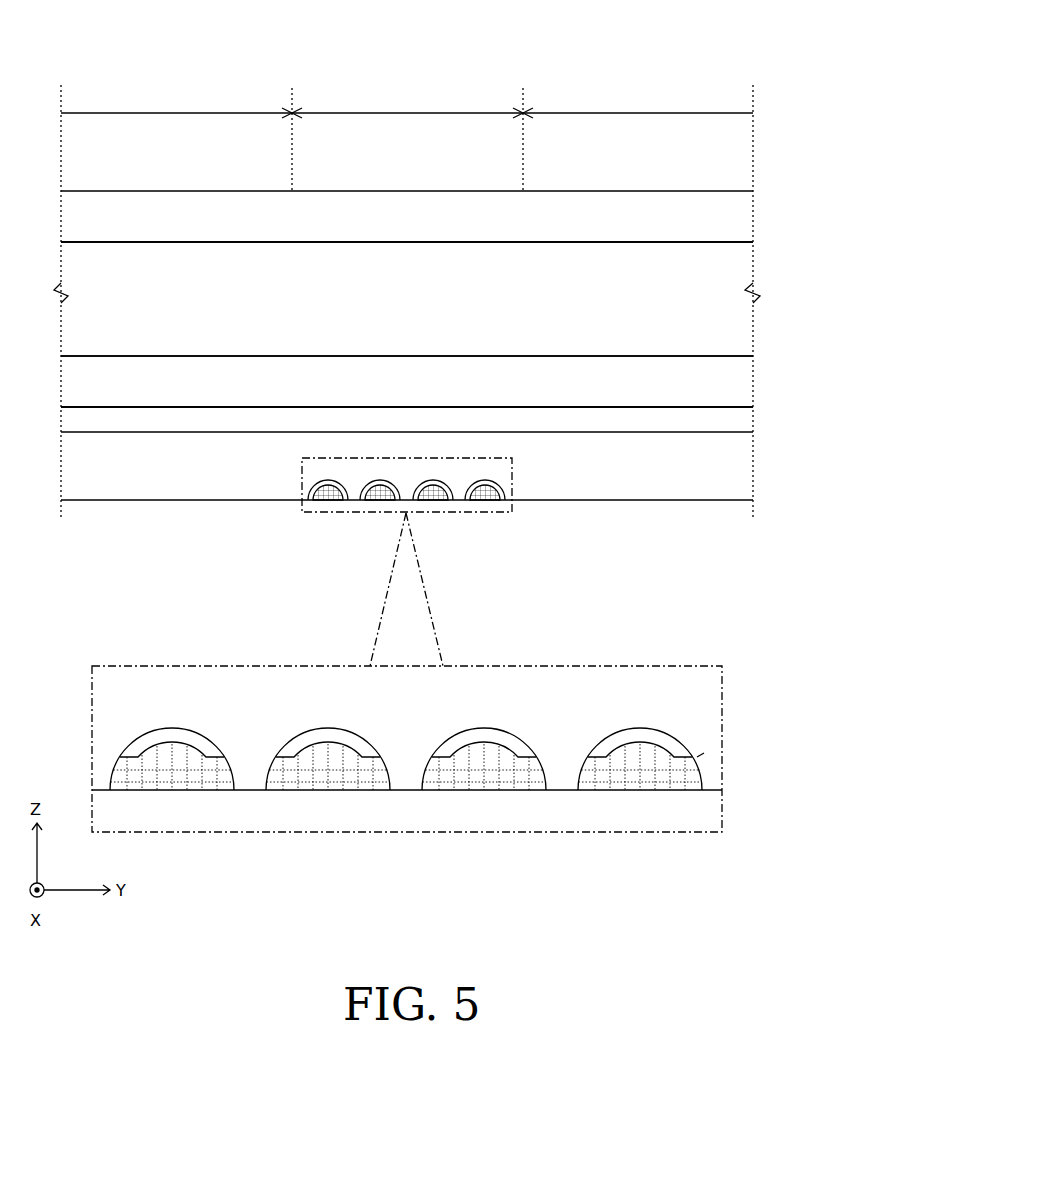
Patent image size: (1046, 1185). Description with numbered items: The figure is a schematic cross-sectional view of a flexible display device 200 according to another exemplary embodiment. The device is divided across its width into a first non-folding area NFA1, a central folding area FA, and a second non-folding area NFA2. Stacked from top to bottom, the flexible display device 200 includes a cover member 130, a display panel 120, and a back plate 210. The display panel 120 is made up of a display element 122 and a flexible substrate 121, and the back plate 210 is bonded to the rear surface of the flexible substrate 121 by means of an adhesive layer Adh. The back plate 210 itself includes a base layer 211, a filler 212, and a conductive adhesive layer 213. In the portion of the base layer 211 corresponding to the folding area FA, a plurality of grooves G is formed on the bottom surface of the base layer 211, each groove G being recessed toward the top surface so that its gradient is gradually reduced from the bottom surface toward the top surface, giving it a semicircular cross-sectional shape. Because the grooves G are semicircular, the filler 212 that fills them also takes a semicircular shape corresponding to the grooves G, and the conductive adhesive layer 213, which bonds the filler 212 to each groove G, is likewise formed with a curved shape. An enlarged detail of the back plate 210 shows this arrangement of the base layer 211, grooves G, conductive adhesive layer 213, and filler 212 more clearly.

The flexible display device 200 is at (731, 33).
The cover member 130 is at (733, 219).
The display element 122 is at (735, 298).
The flexible substrate 121 is at (735, 385).
The display panel 120 is at (820, 290).
The adhesive layer Adh is at (735, 420).
The base layer 211 is at (585, 485).
The back plate 210 is at (598, 583).
The conductive adhesive layer 213 is at (478, 506).
The filler 212 is at (495, 505).
The grooves G is at (699, 752).
The first non-folding area NFA1 is at (181, 104).
The folding area FA is at (412, 104).
The second non-folding area NFA2 is at (638, 102).